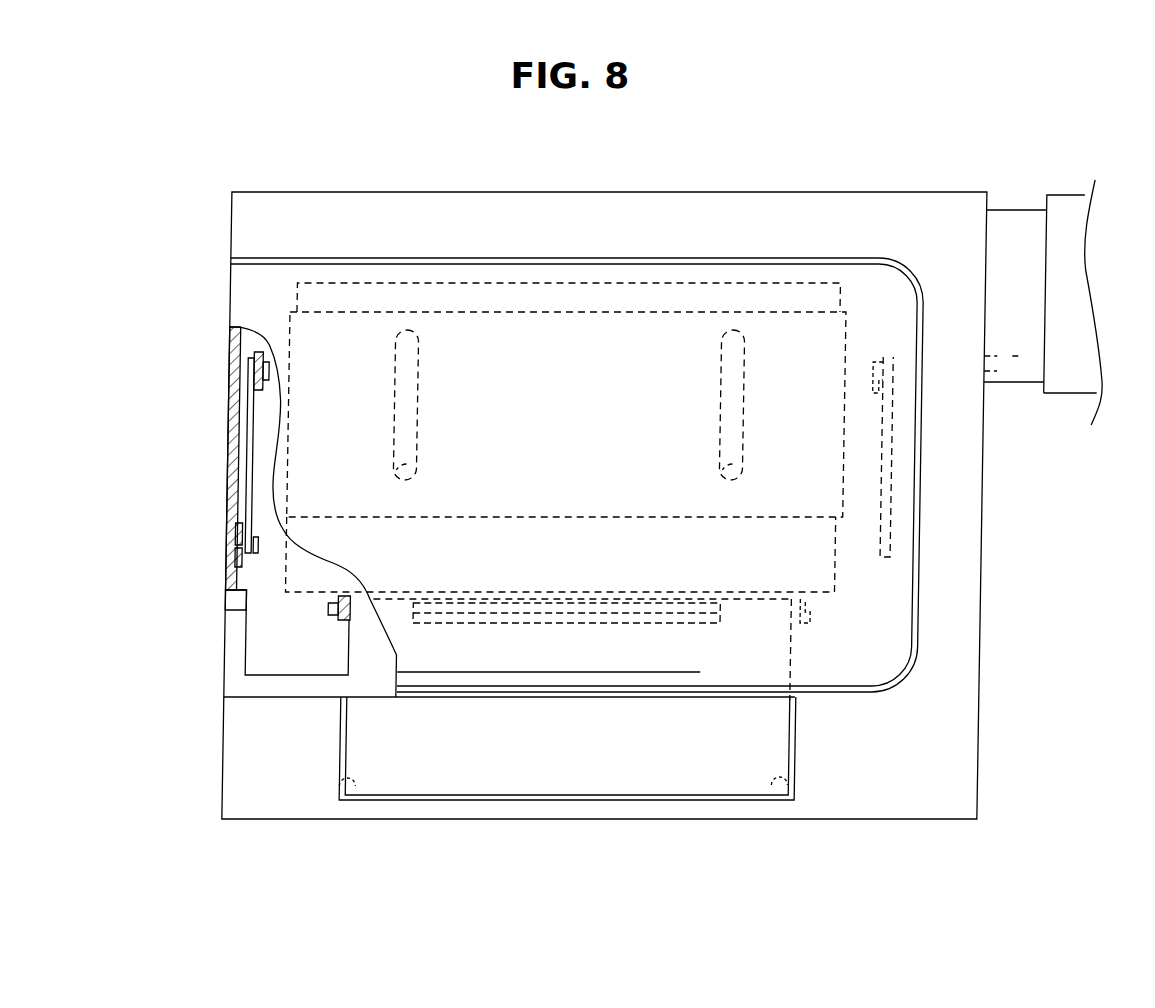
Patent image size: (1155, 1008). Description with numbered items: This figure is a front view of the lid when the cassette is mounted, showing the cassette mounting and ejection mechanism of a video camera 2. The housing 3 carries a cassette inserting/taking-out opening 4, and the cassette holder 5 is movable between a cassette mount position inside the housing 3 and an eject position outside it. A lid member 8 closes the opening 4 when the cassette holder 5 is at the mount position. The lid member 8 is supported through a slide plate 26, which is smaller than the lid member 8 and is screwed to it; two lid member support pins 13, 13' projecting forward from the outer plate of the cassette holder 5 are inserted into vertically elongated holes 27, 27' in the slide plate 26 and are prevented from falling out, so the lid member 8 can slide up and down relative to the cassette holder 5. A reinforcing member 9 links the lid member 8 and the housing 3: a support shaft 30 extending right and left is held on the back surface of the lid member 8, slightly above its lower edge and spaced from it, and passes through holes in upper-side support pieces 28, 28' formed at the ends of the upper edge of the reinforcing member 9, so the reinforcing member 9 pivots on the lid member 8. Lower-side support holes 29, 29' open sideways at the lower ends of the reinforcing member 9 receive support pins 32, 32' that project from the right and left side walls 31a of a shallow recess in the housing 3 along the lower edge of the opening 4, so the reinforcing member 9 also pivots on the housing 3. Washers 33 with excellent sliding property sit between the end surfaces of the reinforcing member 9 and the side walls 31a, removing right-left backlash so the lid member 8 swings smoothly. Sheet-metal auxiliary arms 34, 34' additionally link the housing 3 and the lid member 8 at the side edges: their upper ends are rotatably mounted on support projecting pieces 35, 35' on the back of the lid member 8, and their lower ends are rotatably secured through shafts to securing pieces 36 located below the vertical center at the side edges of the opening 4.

The video camera 2 is at (724, 228).
The housing 3 is at (563, 226).
The cassette inserting/taking-out opening 4 is at (466, 262).
The cassette holder 5 is at (386, 283).
The lid member 8 is at (887, 623).
The reinforcing member 9 is at (579, 778).
The lid member support pin 13 is at (440, 450).
The lid member support pin 13' is at (770, 450).
The slide plate 26 is at (855, 343).
The elongated hole 27 is at (438, 405).
The elongated hole 27' is at (768, 405).
The upper-side support piece 28 is at (507, 605).
The upper-side support piece 28' is at (777, 618).
The lower-side support hole 29 is at (386, 827).
The lower-side support hole 29' is at (726, 823).
The support shaft 30 is at (562, 598).
The side wall 31a is at (352, 720).
The support pin 32 is at (386, 754).
The support pin 32' is at (738, 755).
The washer 33 is at (355, 782).
The auxiliary arm 34 is at (198, 458).
The auxiliary arm 34' is at (926, 457).
The support projecting piece 35 is at (203, 452).
The support projecting piece 35' is at (926, 369).
The securing piece 36 is at (252, 566).